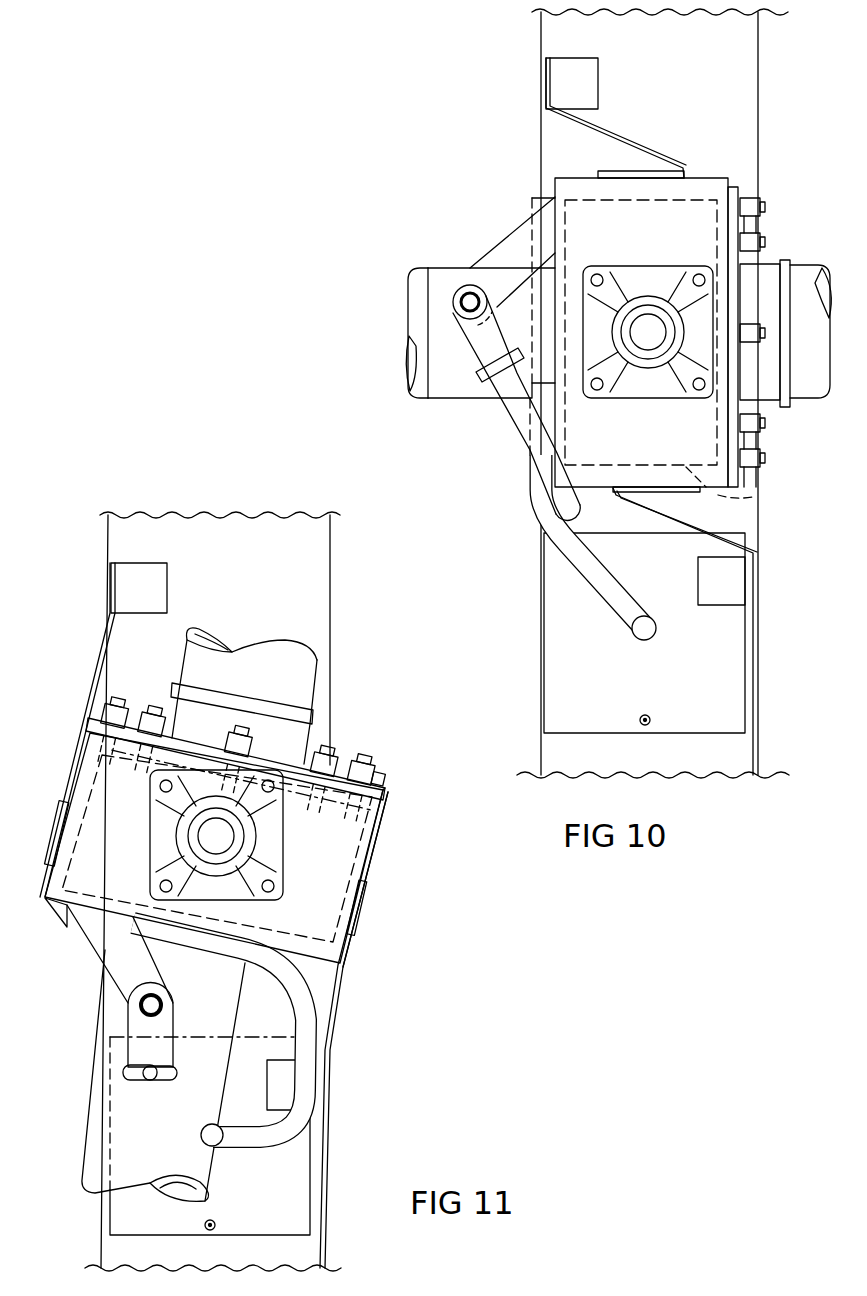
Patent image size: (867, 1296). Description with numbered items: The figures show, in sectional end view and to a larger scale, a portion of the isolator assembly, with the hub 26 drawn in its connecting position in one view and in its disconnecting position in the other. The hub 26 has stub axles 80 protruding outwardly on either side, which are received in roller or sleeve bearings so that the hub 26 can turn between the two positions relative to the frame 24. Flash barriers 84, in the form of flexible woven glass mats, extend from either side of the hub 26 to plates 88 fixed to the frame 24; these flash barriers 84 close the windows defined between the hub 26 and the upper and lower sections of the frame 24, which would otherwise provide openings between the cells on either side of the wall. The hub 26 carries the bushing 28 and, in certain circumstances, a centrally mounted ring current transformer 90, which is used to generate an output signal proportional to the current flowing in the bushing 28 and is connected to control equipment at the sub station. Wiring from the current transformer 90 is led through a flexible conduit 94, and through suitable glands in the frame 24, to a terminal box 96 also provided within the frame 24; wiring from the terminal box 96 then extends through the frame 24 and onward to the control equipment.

In FIG. 10, the frame 24 is at (740, 100).
In FIG. 11, the frame 24 is at (312, 553).
In FIG. 10, the hub 26 is at (768, 216).
In FIG. 11, the hub 26 is at (362, 740).
In FIG. 10, the bushing 28 is at (444, 284).
In FIG. 11, the bushing 28 is at (295, 672).
In FIG. 10, the stub axles 80 is at (648, 330).
In FIG. 11, the stub axles 80 is at (225, 833).
In FIG. 10, the flash barriers 84 is at (634, 148).
In FIG. 11, the flash barriers 84 is at (97, 676).
In FIG. 10, the plates 88 is at (567, 80).
In FIG. 11, the plates 88 is at (136, 588).
In FIG. 10, the ring current transformer 90 is at (750, 494).
In FIG. 11, the ring current transformer 90 is at (345, 906).
In FIG. 10, the flexible conduit 94 is at (567, 552).
In FIG. 11, the flexible conduit 94 is at (288, 1120).
In FIG. 10, the terminal box 96 is at (715, 681).
In FIG. 11, the terminal box 96 is at (312, 1197).